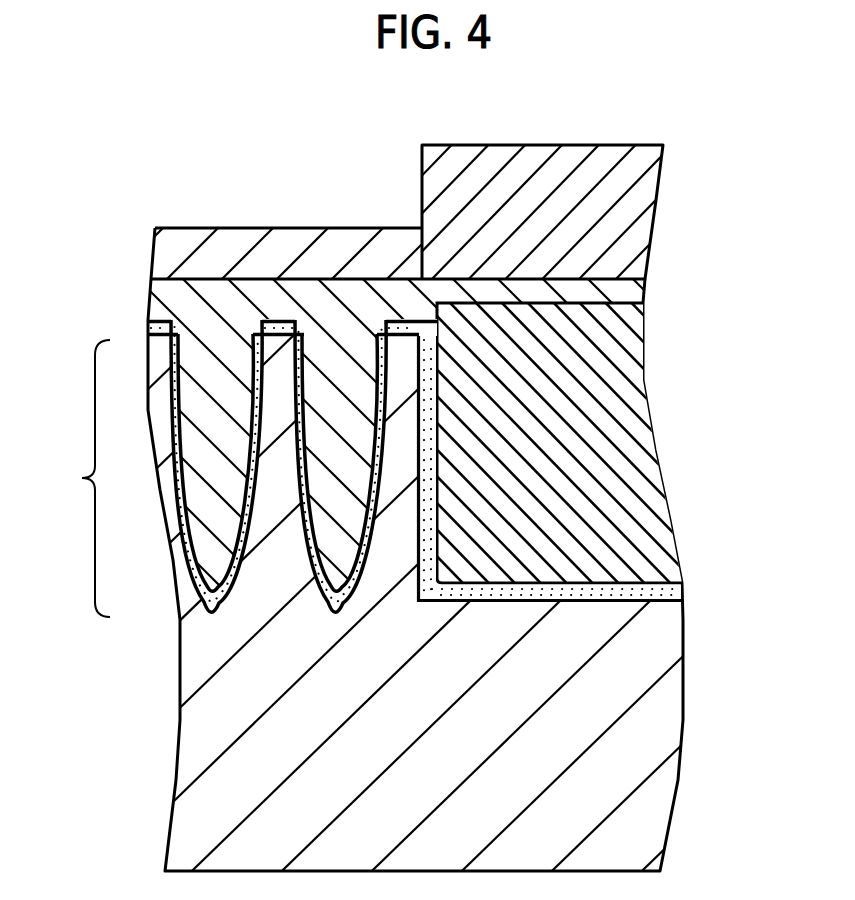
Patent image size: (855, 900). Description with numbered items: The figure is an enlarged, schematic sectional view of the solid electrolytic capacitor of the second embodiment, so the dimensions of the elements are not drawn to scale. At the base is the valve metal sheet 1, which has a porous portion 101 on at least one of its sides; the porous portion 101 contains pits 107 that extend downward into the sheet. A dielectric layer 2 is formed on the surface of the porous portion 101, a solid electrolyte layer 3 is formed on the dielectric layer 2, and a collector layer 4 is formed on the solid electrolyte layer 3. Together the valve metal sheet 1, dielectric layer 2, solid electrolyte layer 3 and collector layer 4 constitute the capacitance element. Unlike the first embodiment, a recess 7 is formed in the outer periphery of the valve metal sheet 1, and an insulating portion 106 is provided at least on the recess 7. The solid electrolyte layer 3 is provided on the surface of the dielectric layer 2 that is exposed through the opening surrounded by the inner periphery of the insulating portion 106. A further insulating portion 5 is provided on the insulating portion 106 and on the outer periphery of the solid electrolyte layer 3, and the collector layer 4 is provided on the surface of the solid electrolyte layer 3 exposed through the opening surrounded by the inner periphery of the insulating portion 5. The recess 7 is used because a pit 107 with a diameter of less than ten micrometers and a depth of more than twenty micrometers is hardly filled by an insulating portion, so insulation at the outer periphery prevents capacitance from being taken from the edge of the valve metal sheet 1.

The valve metal sheet 1 is at (625, 702).
The dielectric layer 2 is at (172, 467).
The solid electrolyte layer 3 is at (192, 365).
The collector layer 4 is at (170, 252).
The insulating portion 5 is at (563, 170).
The recess 7 is at (558, 590).
The porous portion 101 is at (68, 478).
The insulating portion 106 is at (622, 378).
The pit 107 is at (337, 616).